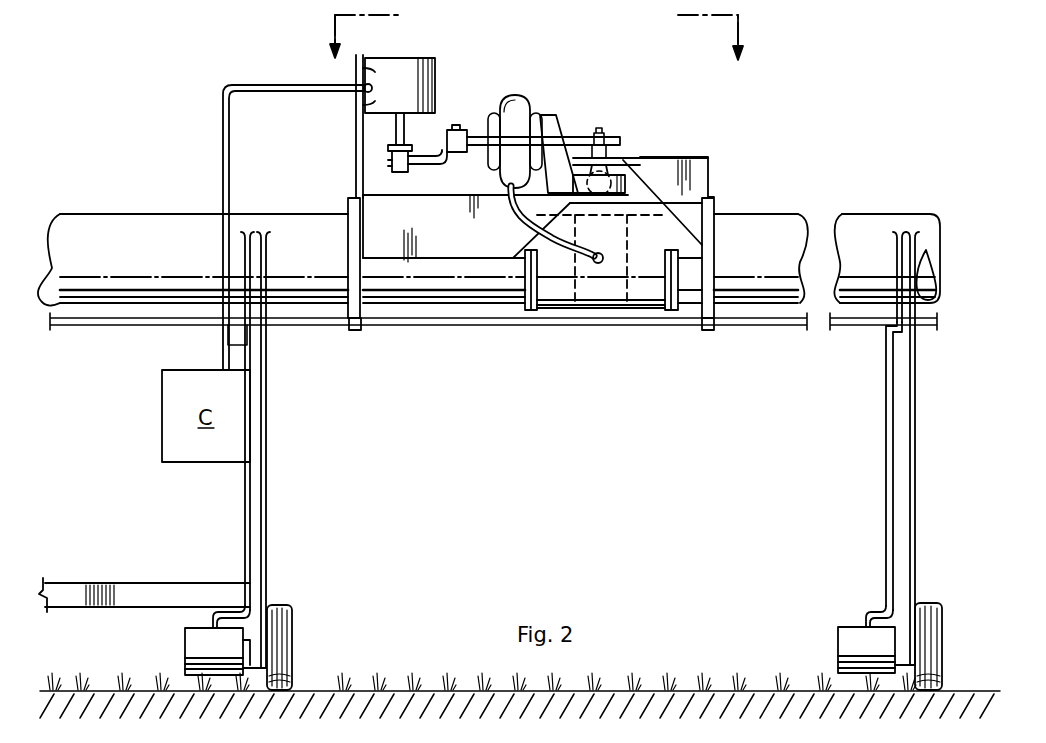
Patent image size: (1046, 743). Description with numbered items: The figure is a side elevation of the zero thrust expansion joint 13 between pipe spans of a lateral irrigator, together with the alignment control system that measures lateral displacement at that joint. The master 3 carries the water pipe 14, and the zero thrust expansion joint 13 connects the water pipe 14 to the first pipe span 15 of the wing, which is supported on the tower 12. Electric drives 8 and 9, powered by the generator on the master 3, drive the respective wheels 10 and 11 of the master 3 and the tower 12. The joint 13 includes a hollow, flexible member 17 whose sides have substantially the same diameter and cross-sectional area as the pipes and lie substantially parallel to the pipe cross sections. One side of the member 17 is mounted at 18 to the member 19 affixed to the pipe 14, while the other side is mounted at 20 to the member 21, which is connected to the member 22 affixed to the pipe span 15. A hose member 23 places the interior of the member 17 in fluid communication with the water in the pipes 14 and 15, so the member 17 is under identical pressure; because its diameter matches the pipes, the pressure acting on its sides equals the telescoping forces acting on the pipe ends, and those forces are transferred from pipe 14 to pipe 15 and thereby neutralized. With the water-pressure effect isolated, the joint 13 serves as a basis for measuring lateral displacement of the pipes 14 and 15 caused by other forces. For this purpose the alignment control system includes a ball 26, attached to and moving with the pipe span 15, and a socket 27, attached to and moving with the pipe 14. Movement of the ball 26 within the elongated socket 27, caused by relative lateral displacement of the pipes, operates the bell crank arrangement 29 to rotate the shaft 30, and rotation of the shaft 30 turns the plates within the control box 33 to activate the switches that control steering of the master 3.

The master 3 is at (152, 583).
The electric drive 8 is at (190, 645).
The electric drive 9 is at (840, 641).
The wheel 10 is at (290, 606).
The wheel 11 is at (922, 603).
The tower 12 is at (893, 545).
The zero thrust expansion joint 13 is at (712, 350).
The water pipe 14 is at (180, 258).
The first pipe span 15 is at (850, 220).
The hollow flexible member 17 is at (512, 98).
The mounting 18 is at (543, 122).
The member 19 is at (451, 244).
The mounting 20 is at (492, 122).
The member 21 is at (560, 142).
The member 22 is at (697, 173).
The hose member 23 is at (582, 240).
The ball 26 is at (603, 177).
The socket 27 is at (627, 187).
The bell crank arrangement 29 is at (406, 172).
The shaft 30 is at (400, 136).
The control box 33 is at (407, 60).